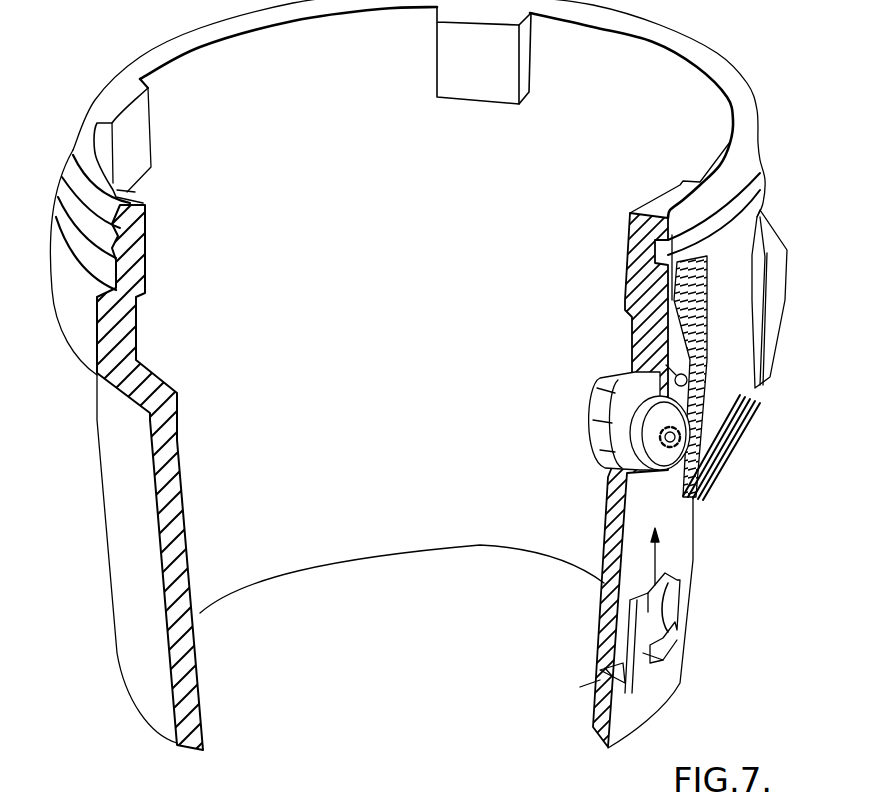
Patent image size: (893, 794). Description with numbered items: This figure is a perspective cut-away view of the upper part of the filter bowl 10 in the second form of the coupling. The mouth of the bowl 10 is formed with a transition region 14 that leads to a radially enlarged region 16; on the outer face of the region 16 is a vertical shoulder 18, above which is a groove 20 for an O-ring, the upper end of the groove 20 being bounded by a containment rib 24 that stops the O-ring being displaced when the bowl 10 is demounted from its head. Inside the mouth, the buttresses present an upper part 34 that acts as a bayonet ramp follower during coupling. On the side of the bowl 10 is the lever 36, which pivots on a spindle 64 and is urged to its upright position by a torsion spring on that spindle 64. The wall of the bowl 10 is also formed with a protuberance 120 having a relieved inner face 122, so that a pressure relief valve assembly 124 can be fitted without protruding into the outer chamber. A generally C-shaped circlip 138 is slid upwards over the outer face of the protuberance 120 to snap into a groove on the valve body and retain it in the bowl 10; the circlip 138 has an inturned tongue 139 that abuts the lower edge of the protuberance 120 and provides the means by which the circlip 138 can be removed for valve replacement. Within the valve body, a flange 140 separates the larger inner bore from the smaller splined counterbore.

The filter bowl 10 is at (133, 577).
The transition region 14 is at (123, 395).
The radially enlarged region 16 is at (83, 327).
The vertical shoulder 18 is at (143, 267).
The groove 20 is at (145, 237).
The containment rib 24 is at (135, 195).
The upper part of buttress 34 is at (140, 147).
The lever 36 is at (752, 350).
The spindle 64 is at (672, 370).
The protuberance 120 is at (653, 340).
The relieved inner face 122 is at (650, 340).
The pressure relief valve assembly 124 is at (576, 455).
The circlip 138 is at (677, 633).
The inturned tongue 139 is at (603, 680).
The flange 140 is at (452, 786).